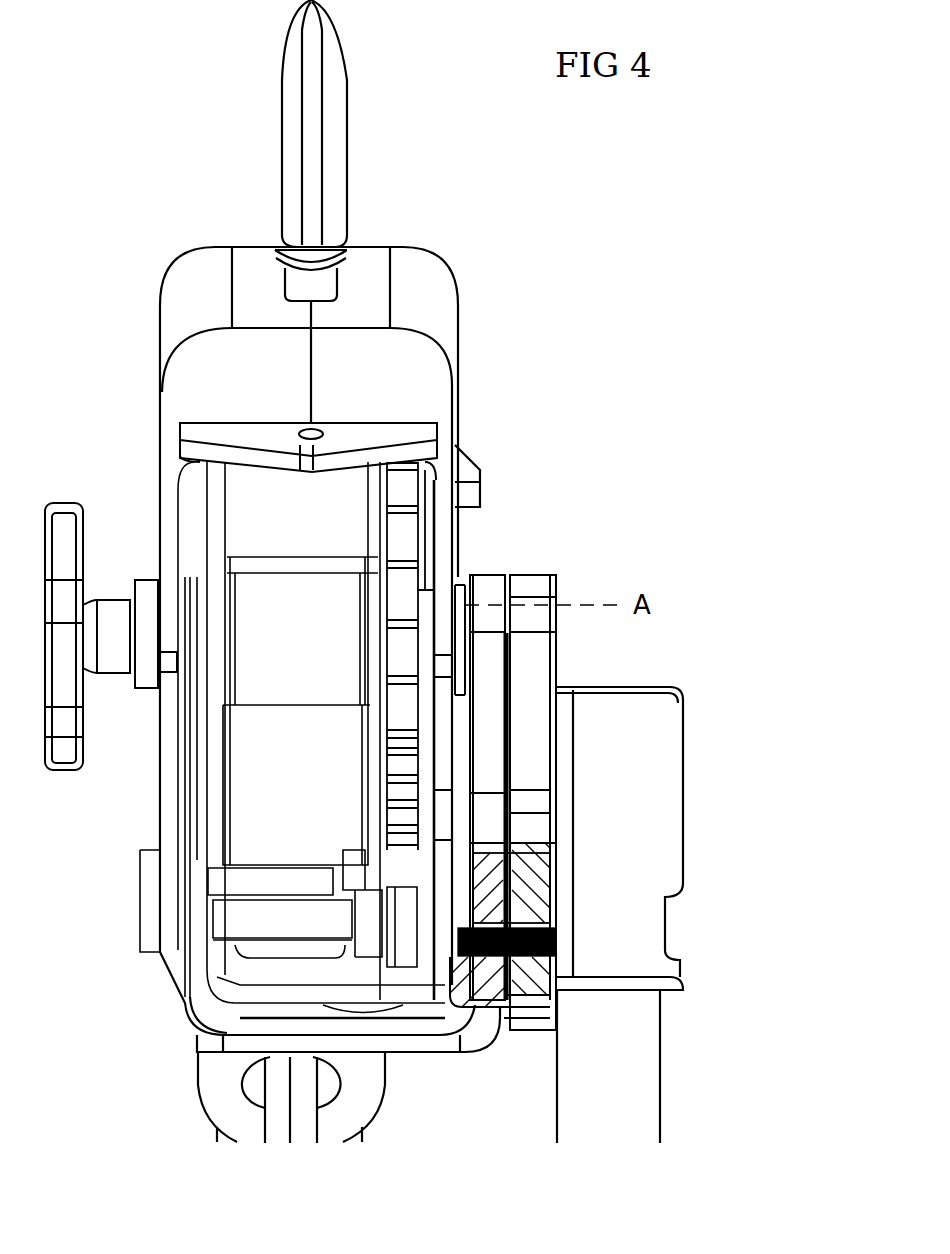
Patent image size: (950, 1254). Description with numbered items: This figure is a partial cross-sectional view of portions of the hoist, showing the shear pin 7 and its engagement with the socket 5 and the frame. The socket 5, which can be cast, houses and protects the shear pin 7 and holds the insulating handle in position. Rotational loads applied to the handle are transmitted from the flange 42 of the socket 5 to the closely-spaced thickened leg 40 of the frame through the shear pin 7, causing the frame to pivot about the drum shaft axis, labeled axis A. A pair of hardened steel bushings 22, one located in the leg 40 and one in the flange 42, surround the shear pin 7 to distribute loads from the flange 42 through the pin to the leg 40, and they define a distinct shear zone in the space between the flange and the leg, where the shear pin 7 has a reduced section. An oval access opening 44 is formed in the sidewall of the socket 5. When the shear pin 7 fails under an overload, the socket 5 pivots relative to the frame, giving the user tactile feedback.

The thickened leg 40 is at (490, 575).
The flange 42 is at (540, 575).
The socket 5 is at (675, 712).
The hardened steel bushings 22 is at (548, 905).
The shear pin 7 is at (560, 933).
The oval access opening 44 is at (683, 953).